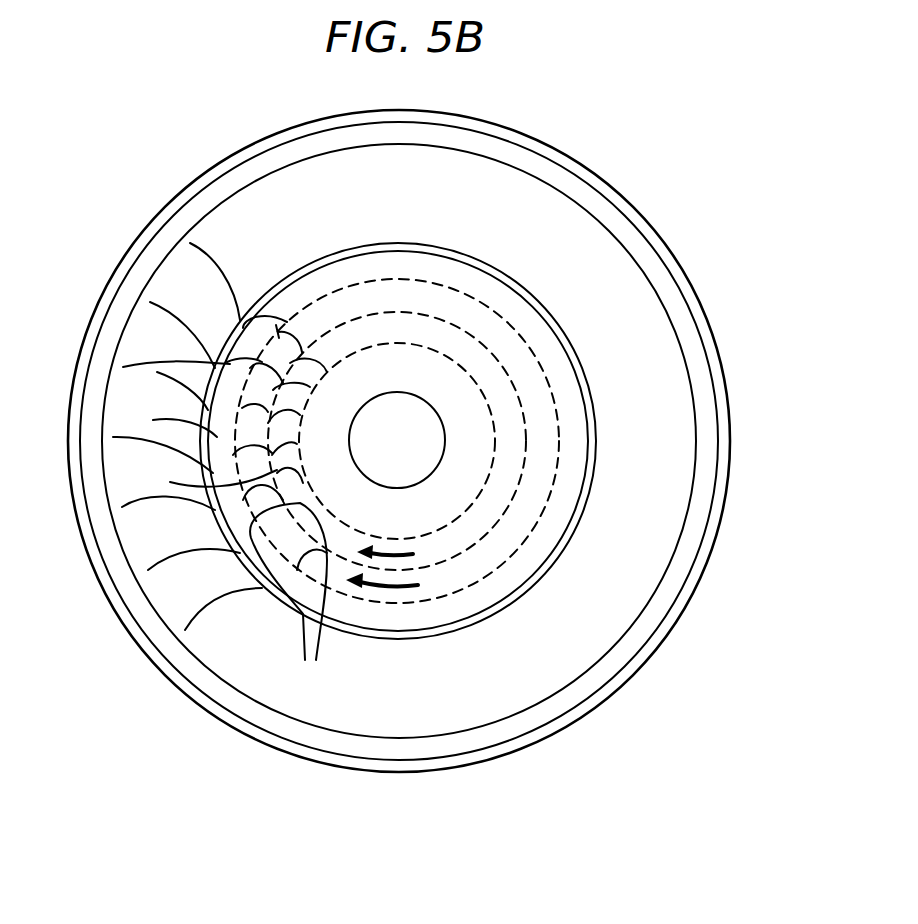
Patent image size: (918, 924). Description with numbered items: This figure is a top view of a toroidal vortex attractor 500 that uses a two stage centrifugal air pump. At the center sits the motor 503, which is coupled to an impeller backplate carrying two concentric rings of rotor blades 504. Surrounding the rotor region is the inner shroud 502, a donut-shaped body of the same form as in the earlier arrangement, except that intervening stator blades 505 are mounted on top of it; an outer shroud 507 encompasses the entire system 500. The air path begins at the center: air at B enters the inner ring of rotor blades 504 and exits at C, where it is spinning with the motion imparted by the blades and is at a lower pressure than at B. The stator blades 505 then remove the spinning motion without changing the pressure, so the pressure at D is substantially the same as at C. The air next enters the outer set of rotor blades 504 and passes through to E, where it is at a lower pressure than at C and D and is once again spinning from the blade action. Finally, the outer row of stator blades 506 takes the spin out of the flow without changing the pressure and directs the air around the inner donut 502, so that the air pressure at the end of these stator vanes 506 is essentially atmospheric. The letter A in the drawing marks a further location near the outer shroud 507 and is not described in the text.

The toroidal vortex attractor 500 is at (812, 222).
The inner shroud 502 is at (670, 483).
The motor 503 is at (437, 470).
The rotor blades 504 is at (290, 596).
The stator blades 505 is at (285, 338).
The outer row of stator blades 506 is at (218, 270).
The outer shroud 507 is at (130, 245).
The region A is at (103, 343).
The air at B is at (324, 430).
The air at C is at (170, 482).
The air at D is at (157, 372).
The air at E is at (153, 420).